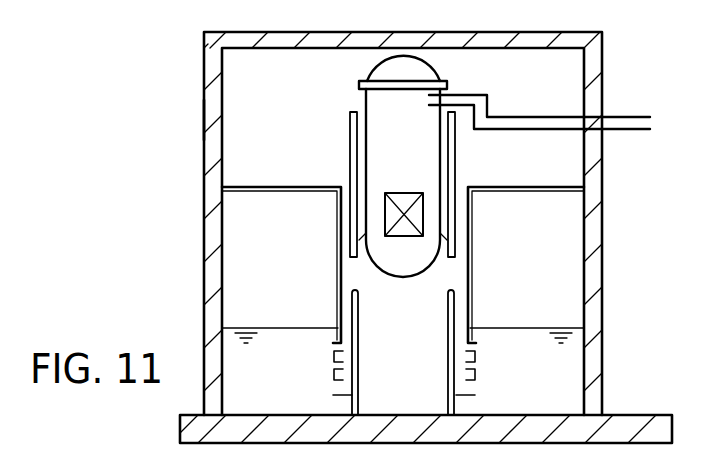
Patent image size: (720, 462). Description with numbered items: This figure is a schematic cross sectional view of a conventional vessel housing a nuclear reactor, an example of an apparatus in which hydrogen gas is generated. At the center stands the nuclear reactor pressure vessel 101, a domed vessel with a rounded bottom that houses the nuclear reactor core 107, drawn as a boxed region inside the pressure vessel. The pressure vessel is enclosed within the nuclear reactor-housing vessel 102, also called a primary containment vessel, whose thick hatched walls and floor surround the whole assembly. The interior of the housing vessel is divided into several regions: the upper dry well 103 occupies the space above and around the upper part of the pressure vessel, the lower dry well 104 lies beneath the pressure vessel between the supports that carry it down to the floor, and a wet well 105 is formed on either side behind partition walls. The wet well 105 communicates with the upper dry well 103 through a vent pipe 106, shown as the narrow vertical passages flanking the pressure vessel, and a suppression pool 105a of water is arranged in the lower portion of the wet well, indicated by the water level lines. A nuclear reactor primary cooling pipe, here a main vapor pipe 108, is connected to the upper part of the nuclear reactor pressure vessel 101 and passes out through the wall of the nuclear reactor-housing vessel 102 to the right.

The nuclear reactor pressure vessel 101 is at (380, 103).
The nuclear reactor-housing vessel 102 is at (603, 52).
The upper dry well 103 is at (235, 63).
The lower dry well 104 is at (372, 305).
The wet well 105 is at (568, 317).
The suppression pool 105a is at (529, 343).
The vent pipe 106 is at (350, 220).
The nuclear reactor core 107 is at (402, 194).
The main vapor pipe 108 is at (628, 130).